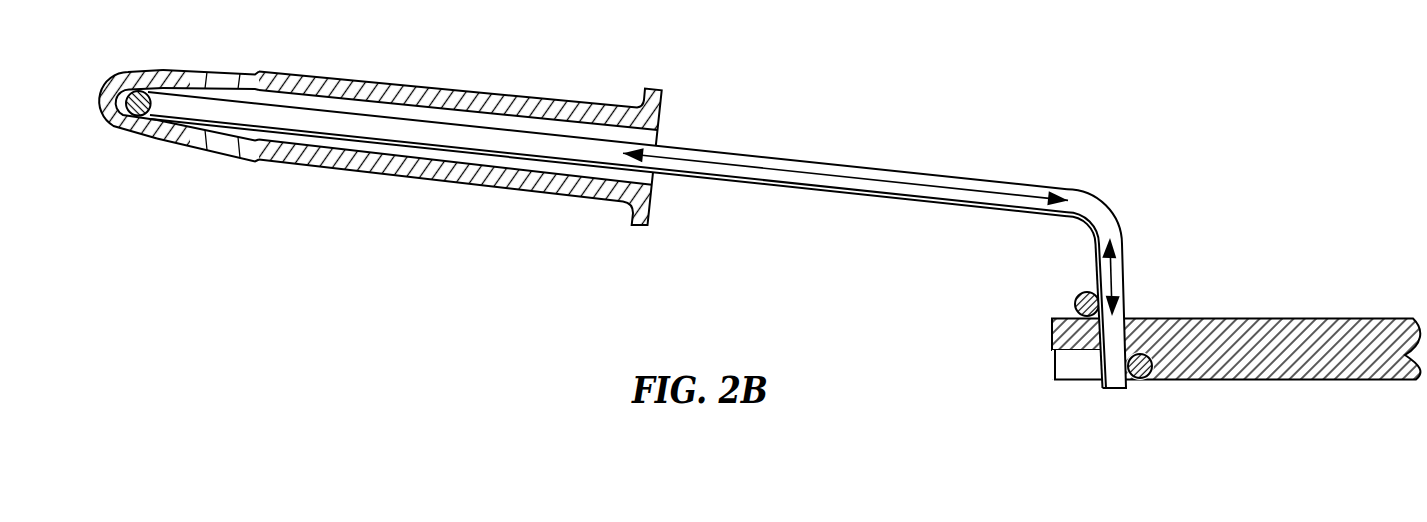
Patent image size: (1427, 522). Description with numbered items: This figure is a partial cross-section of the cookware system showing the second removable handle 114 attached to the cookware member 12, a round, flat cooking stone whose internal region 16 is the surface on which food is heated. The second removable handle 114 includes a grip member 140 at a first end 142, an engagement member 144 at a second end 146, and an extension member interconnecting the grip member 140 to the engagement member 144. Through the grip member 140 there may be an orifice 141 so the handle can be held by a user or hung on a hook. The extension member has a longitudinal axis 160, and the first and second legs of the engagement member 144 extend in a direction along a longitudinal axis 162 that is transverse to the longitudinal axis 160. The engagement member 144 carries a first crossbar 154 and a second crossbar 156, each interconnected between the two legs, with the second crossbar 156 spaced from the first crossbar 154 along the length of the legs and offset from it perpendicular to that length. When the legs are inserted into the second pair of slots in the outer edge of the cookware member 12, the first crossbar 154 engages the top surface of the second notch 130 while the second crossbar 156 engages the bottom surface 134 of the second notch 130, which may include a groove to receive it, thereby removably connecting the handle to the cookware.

The cookware member 12 is at (1190, 321).
The internal region 16 is at (1247, 318).
The second removable handle 114 is at (655, 209).
The second notch 130 is at (1053, 334).
The bottom surface 134 is at (1078, 363).
The grip member 140 is at (357, 178).
The orifice 141 is at (223, 83).
The first end 142 is at (110, 136).
The engagement member 144 is at (1127, 251).
The second end 146 is at (1110, 195).
The first crossbar 154 is at (1076, 300).
The second crossbar 156 is at (1142, 379).
The longitudinal axis 160 is at (870, 181).
The longitudinal axis 162 is at (1100, 274).